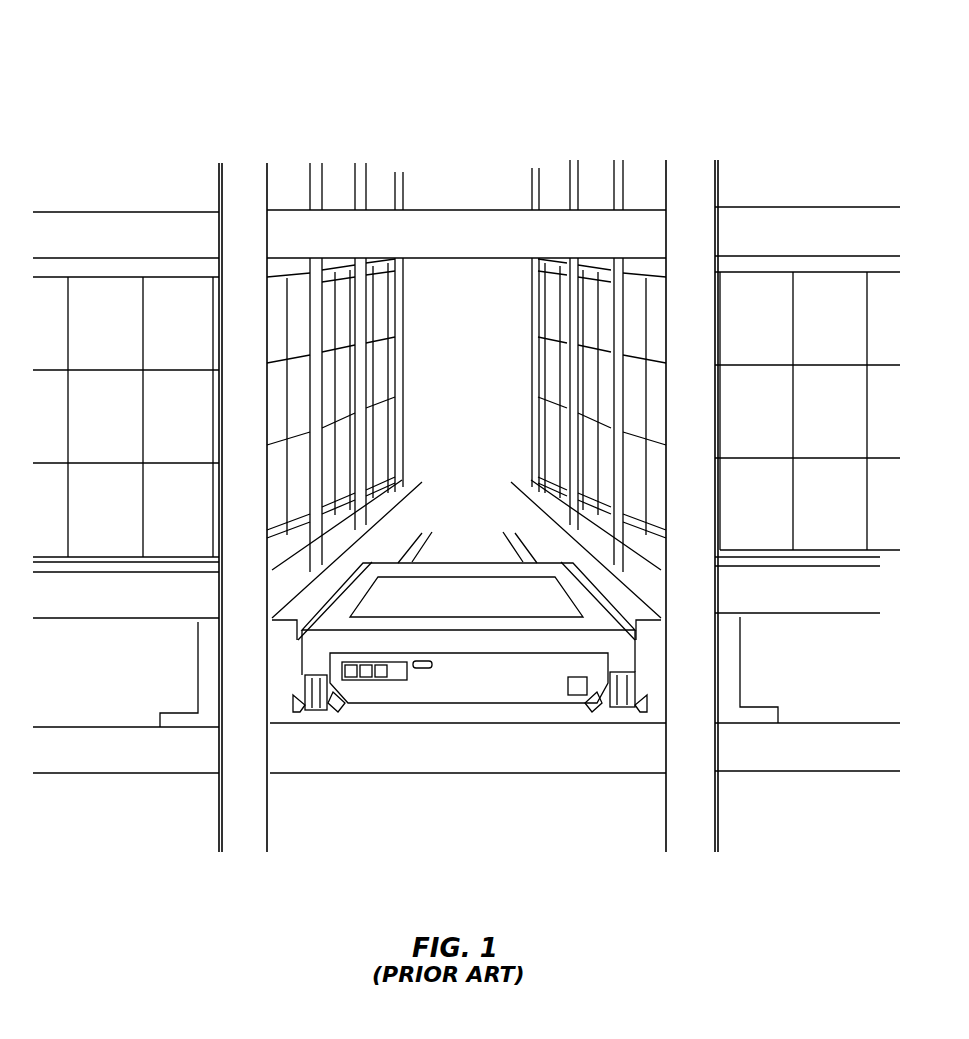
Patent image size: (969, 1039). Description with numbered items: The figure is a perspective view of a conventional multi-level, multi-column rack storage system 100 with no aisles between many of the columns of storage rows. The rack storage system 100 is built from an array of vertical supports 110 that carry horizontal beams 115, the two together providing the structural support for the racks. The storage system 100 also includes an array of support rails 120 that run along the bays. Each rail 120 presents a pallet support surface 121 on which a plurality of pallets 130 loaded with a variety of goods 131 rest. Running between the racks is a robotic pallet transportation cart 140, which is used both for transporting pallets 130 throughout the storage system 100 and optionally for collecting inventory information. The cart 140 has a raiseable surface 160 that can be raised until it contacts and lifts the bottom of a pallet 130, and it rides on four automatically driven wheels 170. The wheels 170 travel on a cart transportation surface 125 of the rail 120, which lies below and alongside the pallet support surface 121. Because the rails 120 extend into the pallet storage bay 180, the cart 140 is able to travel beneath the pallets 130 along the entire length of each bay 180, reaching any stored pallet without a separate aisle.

The rack storage system 100 is at (165, 102).
The vertical supports 110 is at (230, 825).
The horizontal beams 115 is at (157, 235).
The support rails 120 is at (283, 672).
The pallet support surface 121 is at (200, 620).
The cart transportation surface 125 is at (333, 698).
The pallets 130 is at (140, 593).
The goods 131 is at (172, 513).
The robotic pallet transportation cart 140 is at (455, 712).
The raiseable surface 160 is at (443, 588).
The automatically driven wheels 170 is at (318, 698).
The pallet storage bay 180 is at (428, 314).